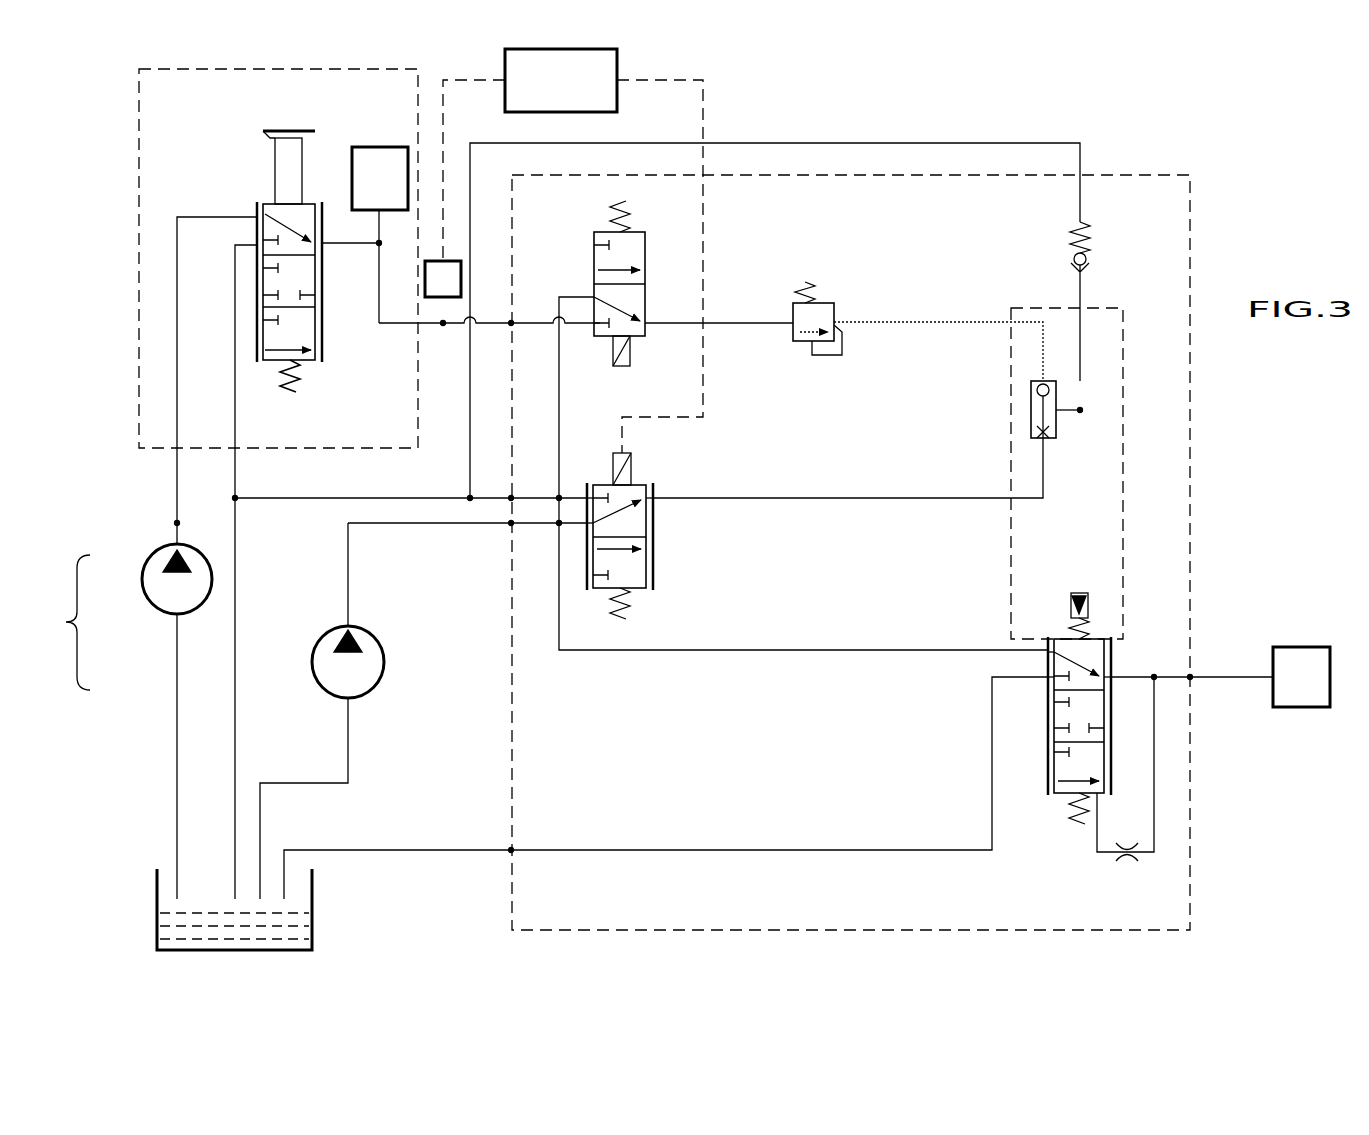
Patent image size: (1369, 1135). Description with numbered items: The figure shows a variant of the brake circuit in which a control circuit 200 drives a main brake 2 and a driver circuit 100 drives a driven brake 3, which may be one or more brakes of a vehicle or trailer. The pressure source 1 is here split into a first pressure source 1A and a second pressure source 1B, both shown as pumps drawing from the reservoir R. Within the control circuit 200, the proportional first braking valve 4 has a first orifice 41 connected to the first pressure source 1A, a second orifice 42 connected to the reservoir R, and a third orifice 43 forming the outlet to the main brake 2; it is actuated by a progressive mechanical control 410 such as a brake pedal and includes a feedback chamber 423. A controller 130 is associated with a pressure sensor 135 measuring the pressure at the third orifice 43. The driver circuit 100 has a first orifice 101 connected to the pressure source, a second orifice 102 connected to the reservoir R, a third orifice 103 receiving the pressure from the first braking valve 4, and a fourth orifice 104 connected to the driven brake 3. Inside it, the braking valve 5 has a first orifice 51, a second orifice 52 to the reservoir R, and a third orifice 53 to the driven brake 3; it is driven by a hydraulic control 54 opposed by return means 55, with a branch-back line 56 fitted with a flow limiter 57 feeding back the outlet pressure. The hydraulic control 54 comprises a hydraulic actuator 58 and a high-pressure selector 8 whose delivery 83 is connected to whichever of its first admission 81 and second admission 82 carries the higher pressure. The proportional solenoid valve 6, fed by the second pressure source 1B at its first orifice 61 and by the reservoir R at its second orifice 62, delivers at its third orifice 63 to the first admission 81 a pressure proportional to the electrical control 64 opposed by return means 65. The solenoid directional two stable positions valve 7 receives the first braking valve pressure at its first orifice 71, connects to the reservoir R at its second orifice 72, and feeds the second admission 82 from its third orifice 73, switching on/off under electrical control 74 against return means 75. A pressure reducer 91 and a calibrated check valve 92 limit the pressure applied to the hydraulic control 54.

The pressure source 1 is at (215, 721).
The first pressure source 1A is at (142, 577).
The second pressure source 1B is at (312, 660).
The main brake 2 is at (372, 190).
The driven brake 3 is at (1294, 689).
The first braking valve 4 is at (273, 264).
The first orifice 41 is at (257, 212).
The second orifice 42 is at (256, 247).
The third orifice 43 is at (320, 244).
The progressive mechanical control 410 is at (285, 131).
The feedback chamber 423 is at (294, 395).
The braking valve 5 is at (1081, 710).
The first orifice 51 is at (1048, 652).
The second orifice 52 is at (1048, 683).
The third orifice 53 is at (1112, 672).
The hydraulic control 54 is at (1030, 308).
The return means 55 is at (1072, 822).
The branch-back line 56 is at (1150, 852).
The flow limiter 57 is at (1126, 862).
The hydraulic actuator 58 is at (1088, 597).
The proportional solenoid valve 6 is at (624, 535).
The first orifice 61 is at (587, 530).
The second orifice 62 is at (588, 497).
The third orifice 63 is at (654, 497).
The electrical control 64 is at (631, 457).
The return means 65 is at (622, 612).
The solenoid directional two stable positions valve 7 is at (627, 293).
The first orifice 71 is at (594, 323).
The second orifice 72 is at (594, 290).
The third orifice 73 is at (648, 320).
The electrical control 74 is at (620, 366).
The return means 75 is at (612, 203).
The high-pressure selector 8 is at (1032, 411).
The first admission 81 is at (1040, 438).
The second admission 82 is at (1047, 382).
The delivery 83 is at (1056, 410).
The pressure reducer 91 is at (840, 302).
The calibrated check valve 92 is at (1086, 237).
The driver circuit 100 is at (1190, 208).
The first orifice 101 is at (511, 523).
The second orifice 102 is at (511, 498).
The third orifice 103 is at (512, 323).
The fourth orifice 104 is at (1200, 677).
The controller 130 is at (545, 93).
The pressure sensor 135 is at (433, 280).
The control circuit 200 is at (139, 253).
The reservoir R is at (157, 915).